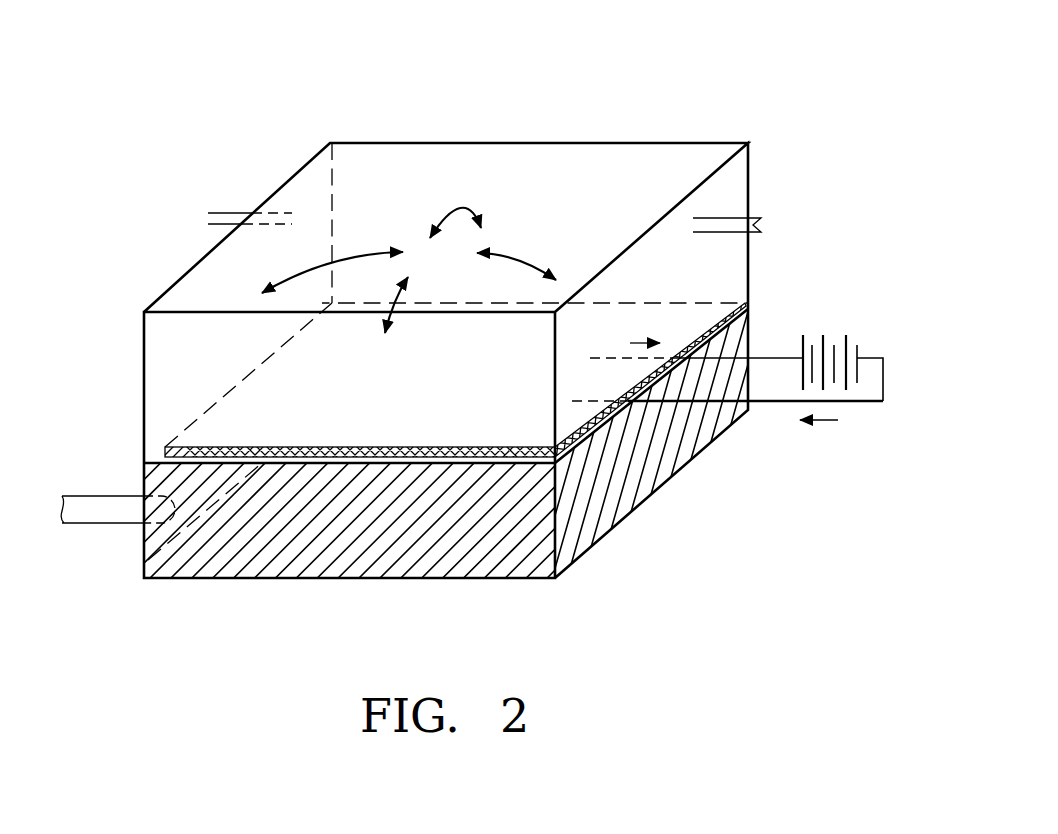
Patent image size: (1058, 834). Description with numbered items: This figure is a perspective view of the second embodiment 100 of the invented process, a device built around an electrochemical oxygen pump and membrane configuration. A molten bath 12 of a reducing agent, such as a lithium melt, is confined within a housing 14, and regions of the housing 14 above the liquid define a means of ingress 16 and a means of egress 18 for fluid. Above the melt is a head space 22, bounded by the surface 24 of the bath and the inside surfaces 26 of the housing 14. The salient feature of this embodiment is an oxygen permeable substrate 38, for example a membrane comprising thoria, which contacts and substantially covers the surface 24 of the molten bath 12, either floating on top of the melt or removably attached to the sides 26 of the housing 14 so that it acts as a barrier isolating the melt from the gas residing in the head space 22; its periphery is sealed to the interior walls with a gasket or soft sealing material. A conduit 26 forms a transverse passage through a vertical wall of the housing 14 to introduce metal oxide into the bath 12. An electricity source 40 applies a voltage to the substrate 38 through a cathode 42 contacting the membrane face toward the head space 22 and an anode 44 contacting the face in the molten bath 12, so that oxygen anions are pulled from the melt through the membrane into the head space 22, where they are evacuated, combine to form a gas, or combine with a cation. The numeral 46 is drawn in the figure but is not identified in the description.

The second embodiment 100 is at (720, 85).
The molten bath 12 is at (342, 533).
The housing 14 is at (557, 522).
The means of ingress 16 is at (228, 213).
The means of egress 18 is at (765, 226).
The head space 22 is at (418, 277).
The surface of the molten bath 24 is at (160, 462).
The conduit 26 is at (167, 353).
The oxygen permeable substrate 38 is at (657, 335).
The electricity source 40 is at (848, 344).
The cathode 42 is at (762, 403).
The anode 44 is at (770, 357).
The drain pipe 46 is at (97, 512).